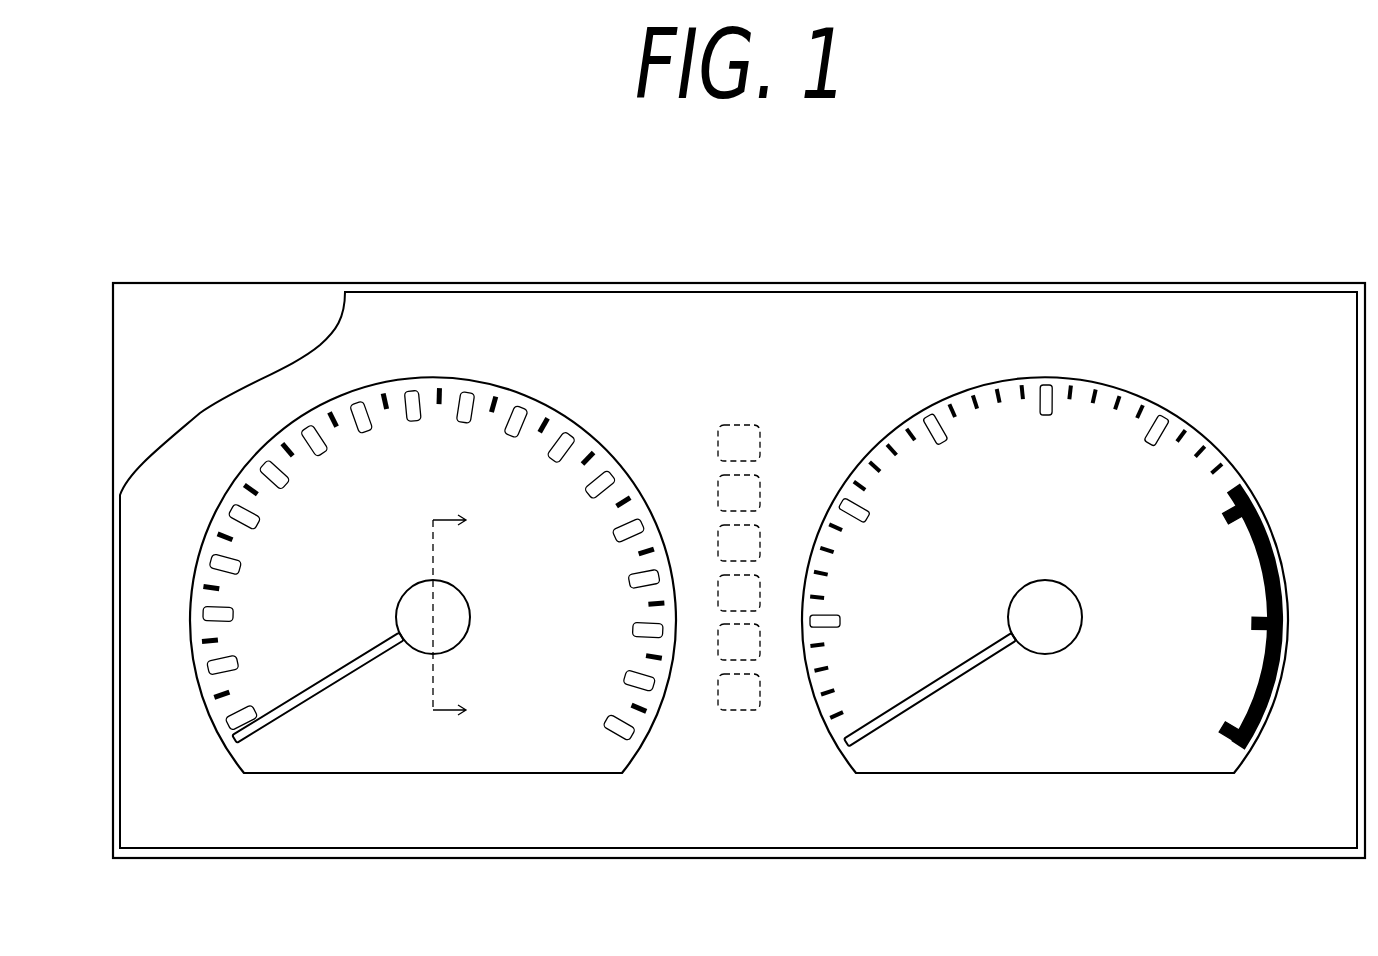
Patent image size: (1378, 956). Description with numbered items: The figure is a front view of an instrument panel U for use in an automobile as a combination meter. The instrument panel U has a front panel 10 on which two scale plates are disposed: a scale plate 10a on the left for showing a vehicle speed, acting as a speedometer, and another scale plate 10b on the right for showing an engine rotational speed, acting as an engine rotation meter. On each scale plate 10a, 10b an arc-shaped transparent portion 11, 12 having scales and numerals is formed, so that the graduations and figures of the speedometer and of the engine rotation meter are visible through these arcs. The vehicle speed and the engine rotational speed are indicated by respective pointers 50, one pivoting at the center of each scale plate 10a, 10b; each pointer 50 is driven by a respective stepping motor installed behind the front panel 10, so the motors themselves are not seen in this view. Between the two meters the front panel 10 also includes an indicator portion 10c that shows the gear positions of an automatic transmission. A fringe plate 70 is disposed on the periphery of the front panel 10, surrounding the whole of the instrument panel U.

The instrument panel U is at (1030, 270).
The fringe plate 70 is at (691, 292).
The front panel 10 is at (885, 323).
The scale plate 10a is at (436, 549).
The scale plate 10b is at (1053, 552).
The indicator portion 10c is at (760, 413).
The arc-shaped transparent portion 11 is at (482, 408).
The arc-shaped transparent portion 12 is at (1025, 392).
The pointer 50 is at (352, 662).